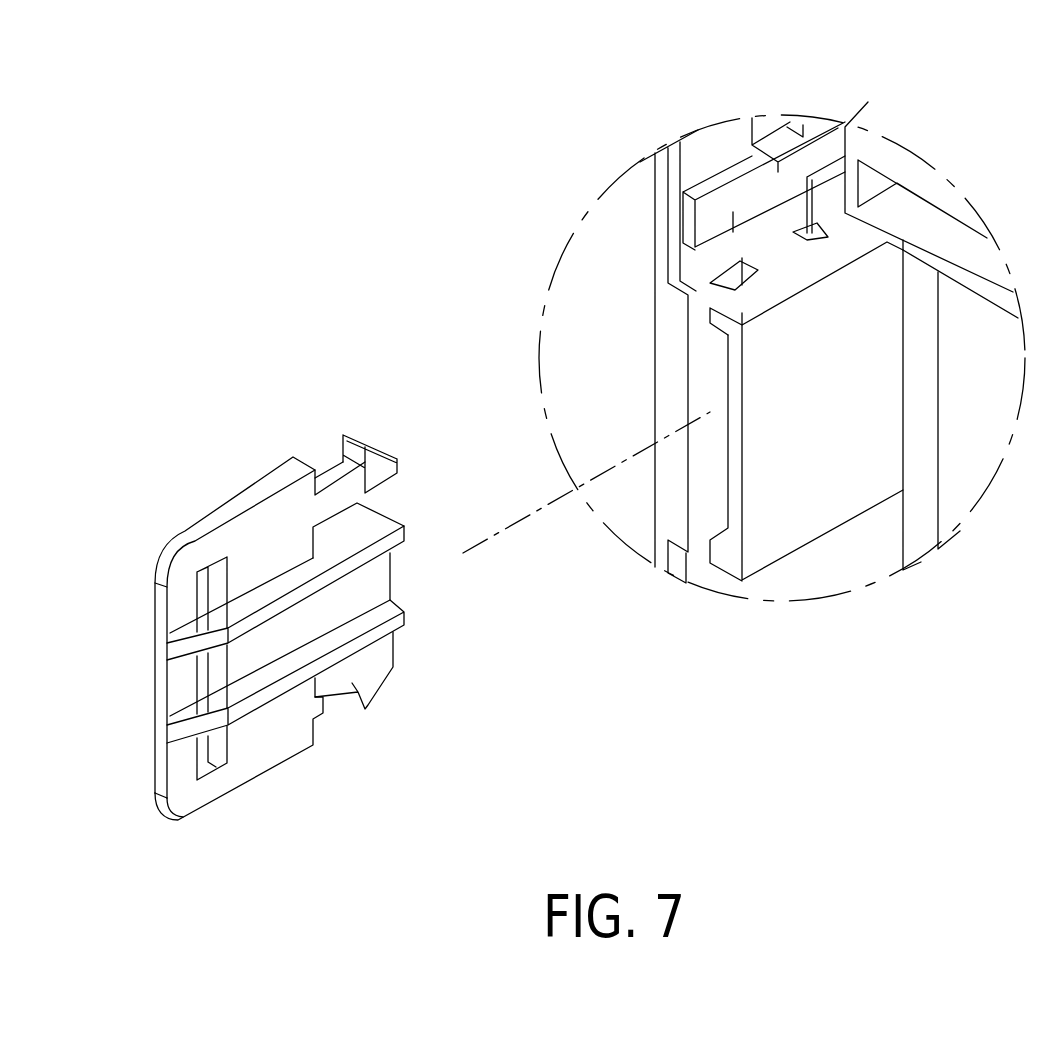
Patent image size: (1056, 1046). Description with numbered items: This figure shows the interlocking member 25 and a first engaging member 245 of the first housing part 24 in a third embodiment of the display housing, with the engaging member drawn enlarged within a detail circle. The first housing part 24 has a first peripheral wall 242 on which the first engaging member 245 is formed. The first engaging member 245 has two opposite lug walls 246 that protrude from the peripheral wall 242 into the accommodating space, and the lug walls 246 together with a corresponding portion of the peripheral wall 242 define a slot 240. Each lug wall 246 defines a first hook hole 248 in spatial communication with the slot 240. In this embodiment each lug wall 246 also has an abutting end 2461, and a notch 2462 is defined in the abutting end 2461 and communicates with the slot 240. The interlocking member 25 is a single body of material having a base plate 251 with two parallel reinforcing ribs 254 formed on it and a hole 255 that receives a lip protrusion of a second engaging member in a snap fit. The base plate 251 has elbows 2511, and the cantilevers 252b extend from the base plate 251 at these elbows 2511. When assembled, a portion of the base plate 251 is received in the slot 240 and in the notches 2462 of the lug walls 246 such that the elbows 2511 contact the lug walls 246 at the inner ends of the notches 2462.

The interlocking member 25 is at (243, 457).
The base plate 251 is at (212, 515).
The elbow 2511 is at (323, 464).
The cantilever 252b is at (352, 487).
The reinforcing rib 254 is at (220, 708).
The hole 255 is at (208, 765).
The first housing part 24 is at (639, 319).
The slot 240 is at (712, 386).
The first peripheral wall 242 is at (653, 422).
The first engaging member 245 is at (850, 543).
The lug wall 246 is at (770, 262).
The abutting end 2461 is at (742, 305).
The notch 2462 is at (715, 292).
The first hook hole 248 is at (810, 170).